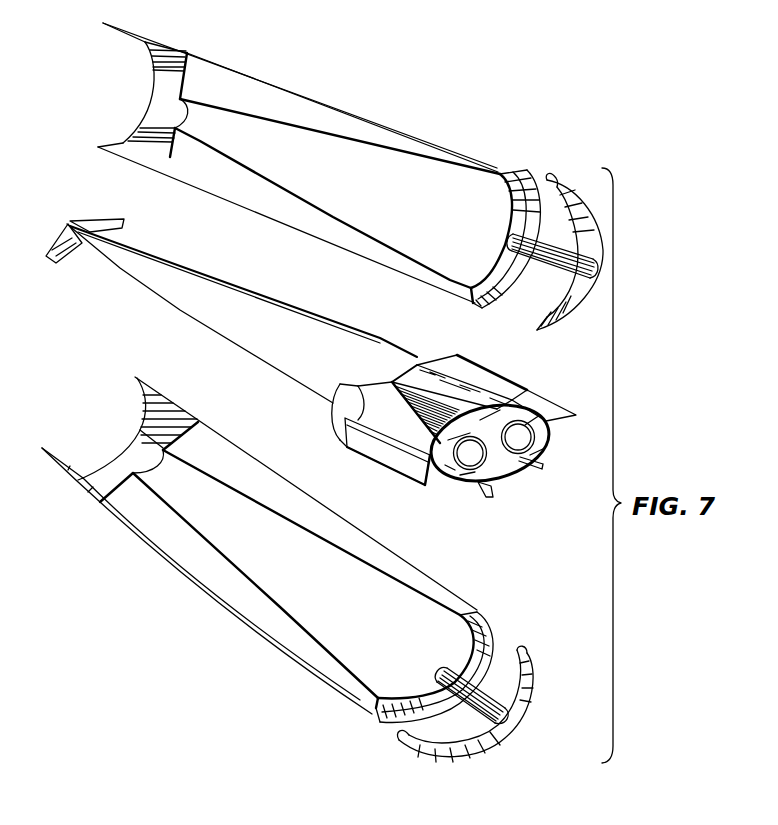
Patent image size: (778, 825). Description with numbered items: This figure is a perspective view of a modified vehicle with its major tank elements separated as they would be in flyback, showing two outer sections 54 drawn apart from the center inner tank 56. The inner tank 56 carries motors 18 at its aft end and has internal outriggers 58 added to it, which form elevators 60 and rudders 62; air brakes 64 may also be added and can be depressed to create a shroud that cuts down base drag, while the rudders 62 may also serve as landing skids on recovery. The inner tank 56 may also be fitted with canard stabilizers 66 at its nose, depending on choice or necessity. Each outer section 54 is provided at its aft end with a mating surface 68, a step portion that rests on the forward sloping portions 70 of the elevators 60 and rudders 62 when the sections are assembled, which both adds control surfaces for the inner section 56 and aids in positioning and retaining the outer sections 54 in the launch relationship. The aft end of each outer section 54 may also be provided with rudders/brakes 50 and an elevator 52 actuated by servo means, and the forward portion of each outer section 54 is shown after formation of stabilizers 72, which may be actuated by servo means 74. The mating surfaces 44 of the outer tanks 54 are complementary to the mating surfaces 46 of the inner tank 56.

The motors 18 is at (517, 446).
The mating surfaces 44 is at (307, 143).
The mating surfaces 46 is at (237, 300).
The rudders/brakes 50 is at (150, 14).
The elevator 52 is at (163, 98).
The outer sections 54 is at (390, 198).
The inner tank 56 is at (327, 356).
The outriggers 58 is at (542, 400).
The elevators 60 is at (552, 405).
The rudders 62 is at (444, 362).
The air brakes 64 is at (410, 389).
The canard stabilizers 66 is at (115, 222).
The mating surface 68 is at (513, 175).
The sloping portions 70 is at (338, 425).
The stabilizers 72 is at (587, 222).
The servo means 74 is at (538, 265).